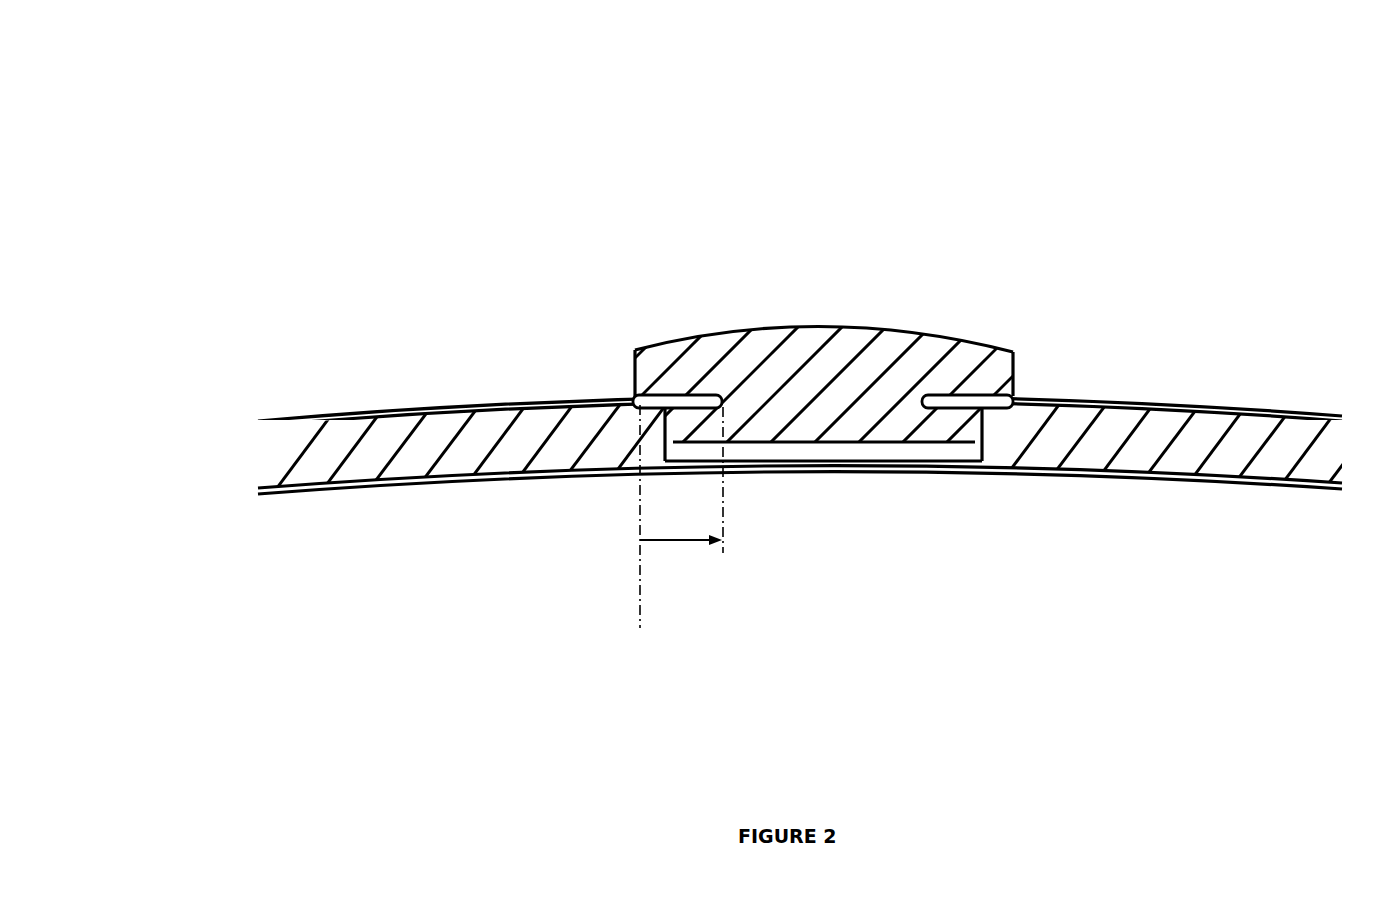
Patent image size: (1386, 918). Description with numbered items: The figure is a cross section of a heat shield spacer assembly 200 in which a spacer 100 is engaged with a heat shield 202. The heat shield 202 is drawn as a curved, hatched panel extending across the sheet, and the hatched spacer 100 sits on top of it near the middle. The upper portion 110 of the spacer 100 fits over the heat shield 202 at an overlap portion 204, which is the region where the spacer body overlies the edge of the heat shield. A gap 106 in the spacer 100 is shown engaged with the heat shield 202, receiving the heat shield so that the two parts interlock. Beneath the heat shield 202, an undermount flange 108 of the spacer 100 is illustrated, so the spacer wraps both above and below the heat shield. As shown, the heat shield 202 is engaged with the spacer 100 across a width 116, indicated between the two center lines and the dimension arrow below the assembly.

The heat shield spacer assembly 200 is at (240, 130).
The spacer 100 is at (828, 405).
The upper portion 110 is at (863, 326).
The overlap portion 204 is at (994, 390).
The heat shield 202 is at (1160, 398).
The gap 106 is at (942, 407).
The undermount flange 108 is at (819, 446).
The width 116 is at (685, 553).